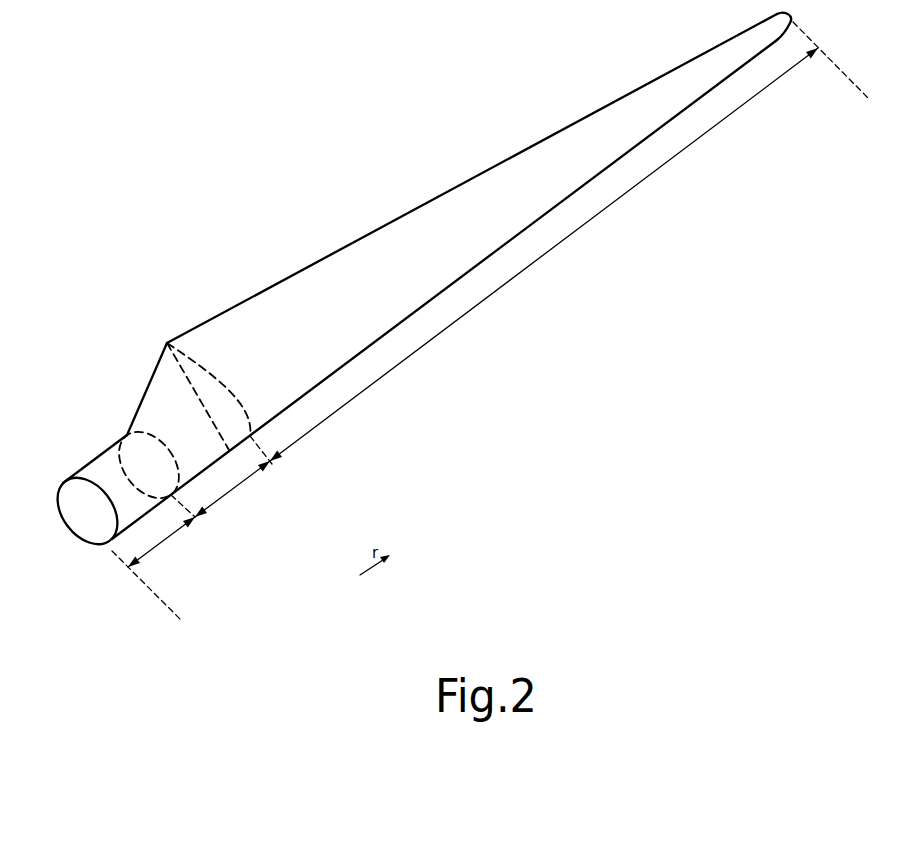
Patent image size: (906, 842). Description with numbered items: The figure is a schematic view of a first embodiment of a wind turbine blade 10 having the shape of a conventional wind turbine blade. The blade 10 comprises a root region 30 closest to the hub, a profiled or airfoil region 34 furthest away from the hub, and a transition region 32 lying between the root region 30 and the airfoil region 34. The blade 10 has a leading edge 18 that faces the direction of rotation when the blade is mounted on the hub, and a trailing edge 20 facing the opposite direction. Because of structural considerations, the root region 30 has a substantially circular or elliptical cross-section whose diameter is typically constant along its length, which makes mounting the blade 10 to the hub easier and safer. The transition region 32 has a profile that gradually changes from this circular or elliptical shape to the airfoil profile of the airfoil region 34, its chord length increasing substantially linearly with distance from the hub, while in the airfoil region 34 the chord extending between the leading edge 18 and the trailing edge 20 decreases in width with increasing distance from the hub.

The wind turbine blade 10 is at (418, 284).
The leading edge 18 is at (565, 200).
The trailing edge 20 is at (575, 121).
The root region 30 is at (162, 542).
The transition region 32 is at (228, 492).
The airfoil region 34 is at (488, 295).